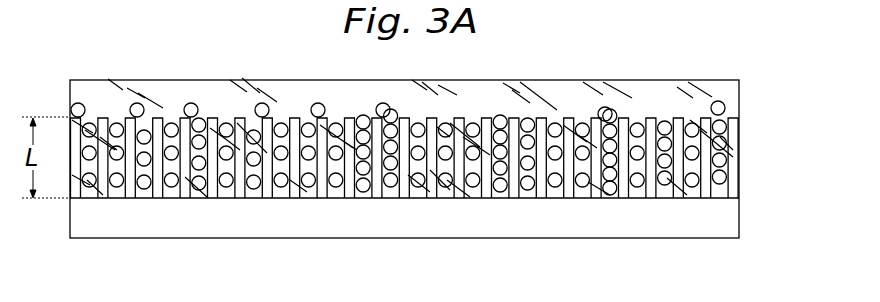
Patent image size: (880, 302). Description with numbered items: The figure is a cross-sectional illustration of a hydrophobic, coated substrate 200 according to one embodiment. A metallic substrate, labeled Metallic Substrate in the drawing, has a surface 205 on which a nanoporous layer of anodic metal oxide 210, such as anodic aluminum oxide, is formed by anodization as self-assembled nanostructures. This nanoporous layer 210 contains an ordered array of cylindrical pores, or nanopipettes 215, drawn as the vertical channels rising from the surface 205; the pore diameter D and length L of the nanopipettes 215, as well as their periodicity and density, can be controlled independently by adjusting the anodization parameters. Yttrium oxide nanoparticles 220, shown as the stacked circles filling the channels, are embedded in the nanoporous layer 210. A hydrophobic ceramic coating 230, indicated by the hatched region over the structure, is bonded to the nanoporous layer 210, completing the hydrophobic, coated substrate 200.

The hydrophobic, coated substrate 200 is at (729, 45).
The surface 205 is at (633, 198).
The nanoporous layer of anodic metal oxide 210 is at (618, 118).
The nanopipettes 215 is at (665, 119).
The yttrium oxide nanoparticles 220 is at (720, 162).
The hydrophobic ceramic coating 230 is at (738, 100).